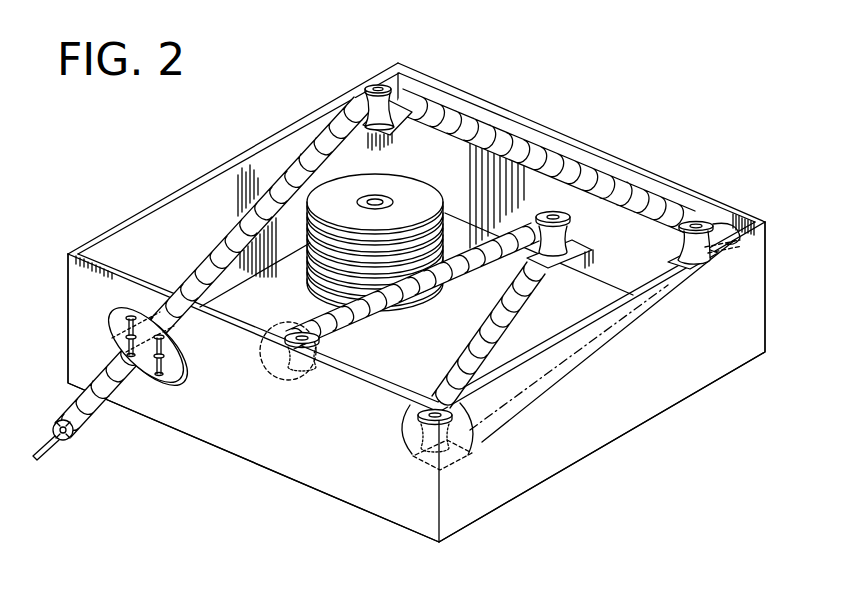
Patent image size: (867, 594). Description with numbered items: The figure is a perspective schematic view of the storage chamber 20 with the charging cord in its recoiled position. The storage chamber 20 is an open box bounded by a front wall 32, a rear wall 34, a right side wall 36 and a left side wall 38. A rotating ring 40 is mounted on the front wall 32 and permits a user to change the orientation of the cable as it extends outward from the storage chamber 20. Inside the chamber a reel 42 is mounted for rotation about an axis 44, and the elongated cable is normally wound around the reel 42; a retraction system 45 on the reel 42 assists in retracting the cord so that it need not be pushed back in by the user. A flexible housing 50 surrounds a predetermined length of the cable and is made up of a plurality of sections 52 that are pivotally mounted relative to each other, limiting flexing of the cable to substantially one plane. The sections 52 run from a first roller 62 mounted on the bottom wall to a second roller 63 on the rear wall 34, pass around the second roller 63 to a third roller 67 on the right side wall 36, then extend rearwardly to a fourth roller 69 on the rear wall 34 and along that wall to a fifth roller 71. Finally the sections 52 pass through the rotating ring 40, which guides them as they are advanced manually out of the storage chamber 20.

The storage chamber 20 is at (632, 445).
The front wall 32 is at (251, 446).
The rear wall 34 is at (545, 206).
The right side wall 36 is at (681, 364).
The left side wall 38 is at (172, 200).
The rotating ring 40 is at (183, 375).
The reel 42 is at (337, 183).
The axis 44 is at (398, 198).
The retraction system 45 is at (390, 200).
The housing 50 is at (448, 343).
The sections 52 is at (356, 340).
The first roller 62 is at (297, 330).
The second roller 63 is at (570, 218).
The third roller 67 is at (457, 418).
The fourth roller 69 is at (706, 221).
The fifth roller 71 is at (384, 86).